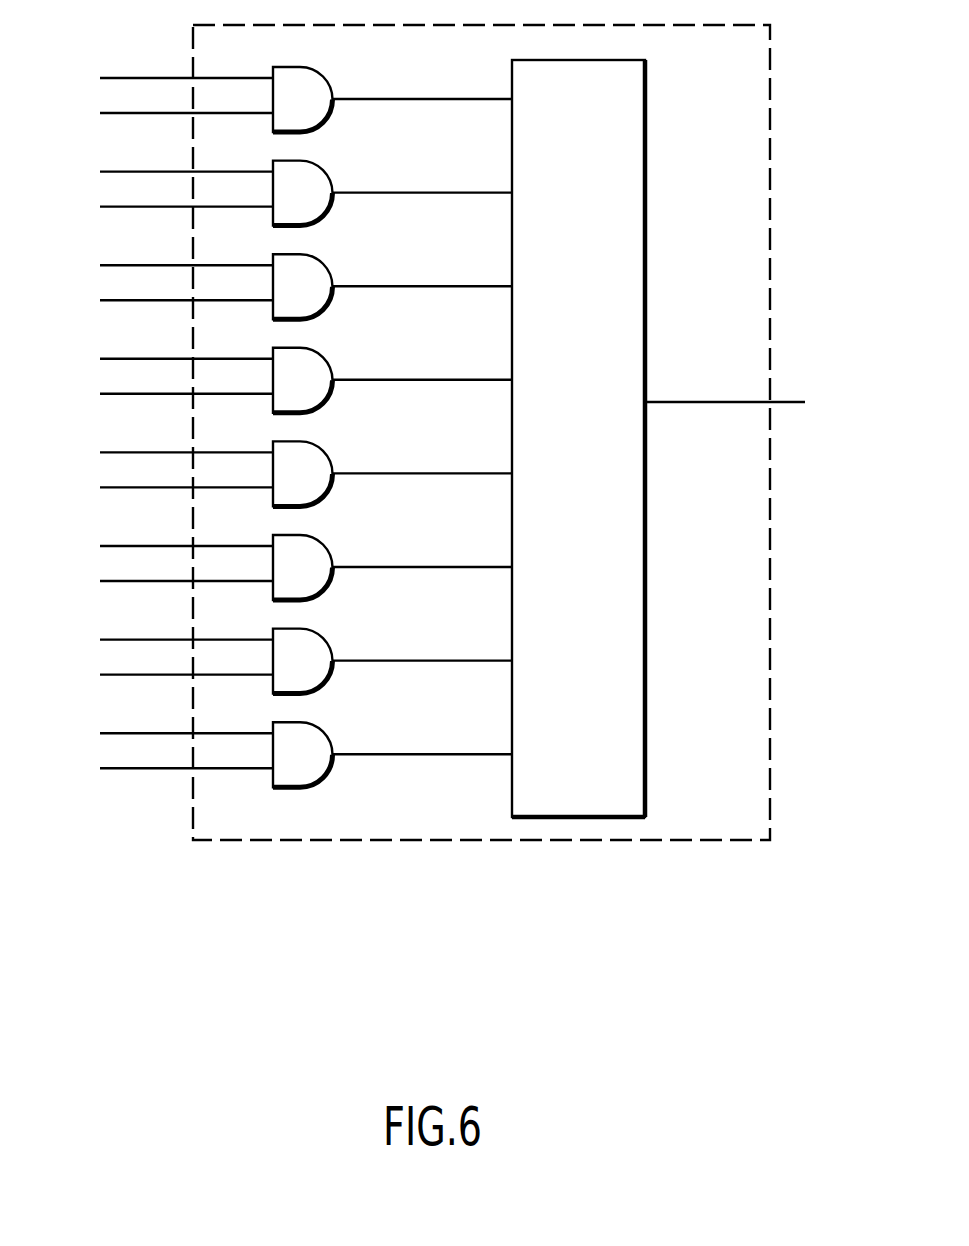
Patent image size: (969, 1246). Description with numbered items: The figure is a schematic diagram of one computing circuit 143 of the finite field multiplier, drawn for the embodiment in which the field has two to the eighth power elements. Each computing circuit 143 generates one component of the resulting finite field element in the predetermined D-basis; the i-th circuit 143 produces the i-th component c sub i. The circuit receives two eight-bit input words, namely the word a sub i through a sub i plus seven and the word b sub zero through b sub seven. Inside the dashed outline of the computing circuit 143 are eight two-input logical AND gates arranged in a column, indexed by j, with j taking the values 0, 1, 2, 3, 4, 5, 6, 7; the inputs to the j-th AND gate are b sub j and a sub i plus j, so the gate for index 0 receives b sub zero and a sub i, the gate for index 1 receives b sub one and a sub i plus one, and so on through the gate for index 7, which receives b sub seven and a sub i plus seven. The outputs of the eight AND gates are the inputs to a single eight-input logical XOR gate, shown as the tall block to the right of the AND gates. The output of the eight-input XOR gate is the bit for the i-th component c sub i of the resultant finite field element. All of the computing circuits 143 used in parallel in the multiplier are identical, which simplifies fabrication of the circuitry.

The computing circuit 143 is at (454, 432).
The AND gate row 0 (b'0, a_i) 0 is at (281, 86).
The AND gate row 1 (b'1, a_i+1) 1 is at (269, 190).
The AND gate row 2 (b'2, a_i+2) 2 is at (269, 284).
The AND gate row 3 (b'3, a_i+3) 3 is at (269, 374).
The AND gate row 4 (b'4, a_i+4) 4 is at (269, 469).
The AND gate row 5 (b'5, a_i+5) 5 is at (269, 563).
The AND gate row 6 (b'6, a_i+6) 6 is at (269, 657).
The AND gate row 7 (b'7, a_i+7) 7 is at (269, 751).